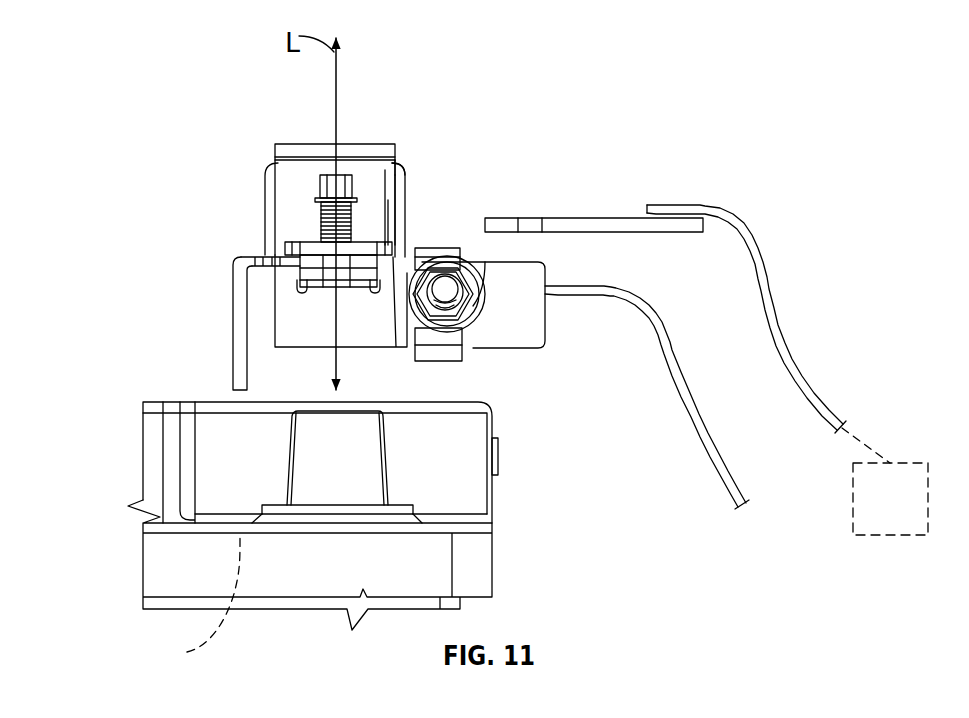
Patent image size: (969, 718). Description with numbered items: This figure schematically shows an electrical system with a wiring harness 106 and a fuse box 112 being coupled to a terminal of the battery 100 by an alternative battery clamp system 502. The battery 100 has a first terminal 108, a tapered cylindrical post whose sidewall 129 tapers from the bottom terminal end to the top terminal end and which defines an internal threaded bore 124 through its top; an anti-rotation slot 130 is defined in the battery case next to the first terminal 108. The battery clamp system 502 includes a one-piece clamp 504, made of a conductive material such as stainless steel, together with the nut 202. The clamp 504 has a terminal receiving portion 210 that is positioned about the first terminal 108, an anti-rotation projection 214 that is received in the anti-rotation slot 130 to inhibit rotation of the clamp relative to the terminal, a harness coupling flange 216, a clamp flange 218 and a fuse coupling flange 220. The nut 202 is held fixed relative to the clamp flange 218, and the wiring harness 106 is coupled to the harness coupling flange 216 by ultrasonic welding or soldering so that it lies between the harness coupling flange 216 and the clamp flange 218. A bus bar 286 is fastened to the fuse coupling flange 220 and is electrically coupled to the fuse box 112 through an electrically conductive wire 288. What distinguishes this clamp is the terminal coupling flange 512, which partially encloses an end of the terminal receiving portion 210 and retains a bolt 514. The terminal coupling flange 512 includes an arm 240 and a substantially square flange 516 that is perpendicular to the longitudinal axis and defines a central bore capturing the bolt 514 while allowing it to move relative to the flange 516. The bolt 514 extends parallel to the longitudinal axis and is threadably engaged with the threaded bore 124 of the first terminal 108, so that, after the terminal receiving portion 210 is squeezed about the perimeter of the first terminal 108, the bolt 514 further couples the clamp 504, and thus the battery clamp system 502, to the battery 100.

The battery 100 is at (137, 572).
The wiring harness 106 is at (695, 456).
The first terminal 108 is at (414, 492).
The fuse box 112 is at (910, 514).
The internal threaded bore 124 is at (322, 413).
The sidewall 129 is at (347, 482).
The anti-rotation slot 130 is at (191, 603).
The nut 202 is at (475, 286).
The terminal receiving portion 210 is at (347, 358).
The anti-rotation projection 214 is at (235, 291).
The harness coupling flange 216 is at (554, 335).
The clamp flange 218 is at (490, 307).
The fuse coupling flange 220 is at (408, 157).
The arm 240 is at (252, 262).
The bus bar 286 is at (591, 218).
The electrically conductive wire 288 is at (790, 362).
The battery clamp system 502 is at (549, 96).
The clamp 504 is at (327, 140).
The terminal coupling flange 512 is at (390, 228).
The bolt 514 is at (313, 227).
The flange 516 is at (377, 227).